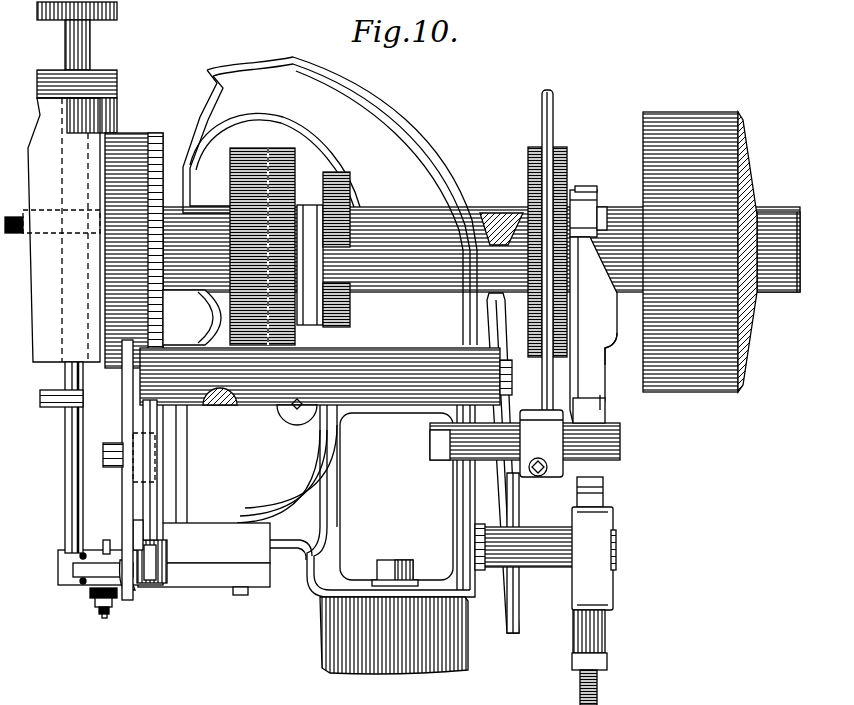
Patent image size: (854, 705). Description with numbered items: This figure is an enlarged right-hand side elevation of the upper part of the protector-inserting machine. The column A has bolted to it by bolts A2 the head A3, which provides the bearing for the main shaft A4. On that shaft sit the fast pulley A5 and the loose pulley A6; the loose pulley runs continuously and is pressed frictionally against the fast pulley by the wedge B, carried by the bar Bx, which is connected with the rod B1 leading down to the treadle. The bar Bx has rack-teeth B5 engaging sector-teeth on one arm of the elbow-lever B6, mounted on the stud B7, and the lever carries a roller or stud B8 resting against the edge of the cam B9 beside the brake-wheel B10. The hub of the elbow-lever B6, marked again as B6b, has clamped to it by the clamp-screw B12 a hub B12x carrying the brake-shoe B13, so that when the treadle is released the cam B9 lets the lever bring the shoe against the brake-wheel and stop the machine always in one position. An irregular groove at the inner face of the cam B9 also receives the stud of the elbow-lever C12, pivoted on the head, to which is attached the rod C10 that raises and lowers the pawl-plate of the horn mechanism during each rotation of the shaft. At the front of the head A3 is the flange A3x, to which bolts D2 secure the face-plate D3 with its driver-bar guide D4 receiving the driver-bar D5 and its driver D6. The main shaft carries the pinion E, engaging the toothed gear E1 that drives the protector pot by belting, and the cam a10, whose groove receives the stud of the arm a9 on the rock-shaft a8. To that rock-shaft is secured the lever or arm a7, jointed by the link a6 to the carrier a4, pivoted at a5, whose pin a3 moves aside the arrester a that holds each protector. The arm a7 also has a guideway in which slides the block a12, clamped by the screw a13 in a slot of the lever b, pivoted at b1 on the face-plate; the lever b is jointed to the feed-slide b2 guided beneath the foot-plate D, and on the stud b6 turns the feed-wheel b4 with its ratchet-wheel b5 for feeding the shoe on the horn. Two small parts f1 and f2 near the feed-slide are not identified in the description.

The pinion E is at (350, 256).
The elbow-lever C12 is at (490, 345).
The rod C10 is at (517, 628).
The driver-bar D5 is at (85, 56).
The driver-bar guide D4 is at (50, 117).
The bolts D2 is at (97, 268).
The face-plate D3 is at (122, 140).
The flange A3x is at (152, 135).
The head A3 is at (383, 133).
The cam a10 is at (237, 150).
The toothed gear E1 is at (350, 182).
The pivot b1 is at (180, 330).
The arm a9 is at (307, 336).
The rock-shaft a8 is at (218, 407).
The column A is at (330, 637).
The bolts A2 is at (394, 562).
The arrester a is at (187, 542).
The foot-plate D is at (220, 577).
The pivot a5 is at (244, 596).
The carrier a4 is at (73, 569).
The link a6 is at (152, 580).
The lever or arm a7 is at (152, 500).
The spring f2 is at (125, 552).
The spring arm f1 is at (132, 572).
The pin or projection a3 is at (105, 550).
The lever b is at (125, 406).
The clamping-screw a13 is at (122, 440).
The block a12 is at (133, 481).
The driver D6 is at (72, 469).
The feed-slide b2 is at (125, 598).
The feed-wheel b4 is at (92, 600).
The ratchet-wheel b5 is at (100, 610).
The stud b6 is at (106, 617).
The main shaft A4 is at (500, 213).
The brake-shoe B13 is at (530, 213).
The cam B9 is at (565, 150).
The brake-wheel B10 is at (545, 104).
The roller or stud B8 is at (570, 193).
The elbow-lever B6 is at (588, 197).
The wedge B is at (552, 403).
The bar Bx is at (604, 384).
The stud B7 is at (485, 465).
The clamp-screw B12 is at (534, 480).
The hub B12x is at (558, 470).
The elbow-lever B6b is at (583, 407).
The rack-teeth B5 is at (600, 490).
The rod B1 is at (594, 700).
The loose pulley A6 is at (645, 112).
The fast pulley A5 is at (748, 147).